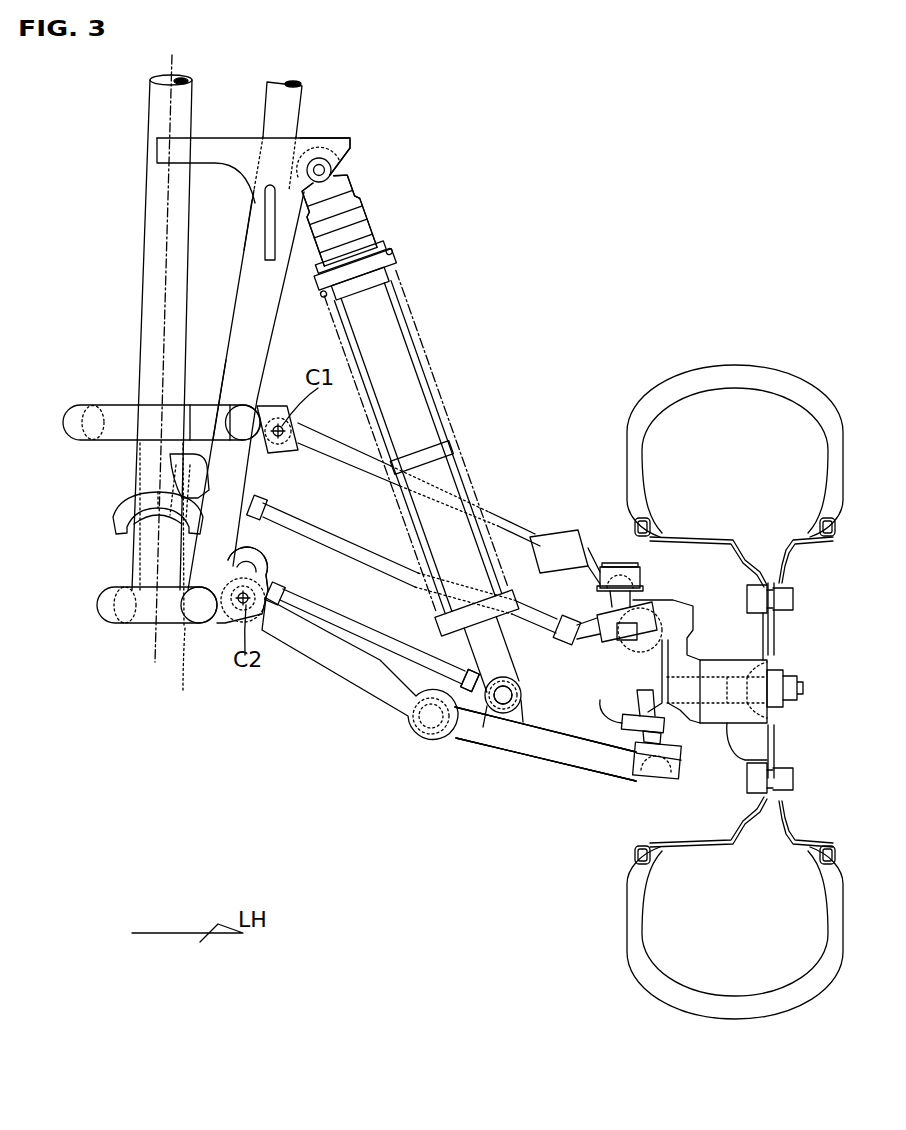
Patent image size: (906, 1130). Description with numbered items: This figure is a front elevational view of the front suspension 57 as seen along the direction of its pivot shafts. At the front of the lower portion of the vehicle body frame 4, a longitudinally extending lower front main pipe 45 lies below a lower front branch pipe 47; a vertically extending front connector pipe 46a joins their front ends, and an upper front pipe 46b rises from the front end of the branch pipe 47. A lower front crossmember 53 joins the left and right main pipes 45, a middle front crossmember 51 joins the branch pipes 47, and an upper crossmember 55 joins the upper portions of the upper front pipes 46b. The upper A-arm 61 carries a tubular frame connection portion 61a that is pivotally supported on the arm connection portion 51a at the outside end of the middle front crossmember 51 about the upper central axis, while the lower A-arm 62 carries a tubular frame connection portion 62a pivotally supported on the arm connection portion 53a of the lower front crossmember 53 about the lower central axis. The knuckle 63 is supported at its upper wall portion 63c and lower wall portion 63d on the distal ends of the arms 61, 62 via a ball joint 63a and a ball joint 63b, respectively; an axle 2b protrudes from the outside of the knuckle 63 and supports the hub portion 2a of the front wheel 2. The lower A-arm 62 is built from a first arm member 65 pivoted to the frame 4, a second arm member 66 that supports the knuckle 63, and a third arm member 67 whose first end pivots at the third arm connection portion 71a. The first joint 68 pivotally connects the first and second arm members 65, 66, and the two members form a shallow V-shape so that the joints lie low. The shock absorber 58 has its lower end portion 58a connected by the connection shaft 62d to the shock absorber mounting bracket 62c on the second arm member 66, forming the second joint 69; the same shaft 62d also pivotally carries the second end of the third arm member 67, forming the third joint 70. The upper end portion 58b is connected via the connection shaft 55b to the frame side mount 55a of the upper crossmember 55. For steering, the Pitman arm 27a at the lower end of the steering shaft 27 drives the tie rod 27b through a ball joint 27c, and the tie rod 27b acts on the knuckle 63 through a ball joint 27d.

The front wheel 2 is at (746, 362).
The hub portion 2a is at (769, 733).
The axle 2b is at (770, 652).
The vehicle body frame 4 is at (300, 89).
The steering shaft 27 is at (146, 268).
The Pitman arm 27a is at (112, 524).
The tie rod 27b is at (332, 540).
The ball joint 27c is at (180, 462).
The ball joint 27d is at (628, 645).
The lower front main pipe 45 is at (170, 581).
The front connector pipe 46a is at (245, 472).
The upper front pipe 46b is at (246, 290).
The lower front branch pipe 47 is at (238, 405).
The middle front crossmember 51 is at (150, 405).
The arm connection portion 51a is at (268, 404).
The lower front crossmember 53 is at (170, 615).
The arm connection portion 53a is at (223, 625).
The upper crossmember 55 is at (226, 136).
The frame side mount 55a is at (335, 146).
The connection shaft 55b is at (332, 168).
The front suspension 57 is at (465, 301).
The shock absorber 58 is at (450, 420).
The lower end portion 58a is at (495, 656).
The upper end portion 58b is at (345, 180).
The upper A-arm 61 is at (352, 450).
The tubular frame connection portion 61a is at (296, 428).
The lower A-arm 62 is at (545, 729).
The tubular frame connection portion 62a is at (258, 620).
The shock absorber mounting bracket 62c is at (483, 712).
The connection shaft 62d is at (502, 704).
The knuckle 63 is at (696, 641).
The ball joint 63a is at (618, 566).
The ball joint 63b is at (652, 780).
The upper wall portion 63c is at (598, 612).
The lower wall portion 63d is at (626, 716).
The first arm member 65 is at (366, 697).
The second arm member 66 is at (541, 757).
The third arm member 67 is at (350, 622).
The first joint 68 is at (430, 740).
The second joint 69 is at (528, 695).
The third joint 70 is at (546, 759).
The third arm connection portion 71a is at (236, 556).